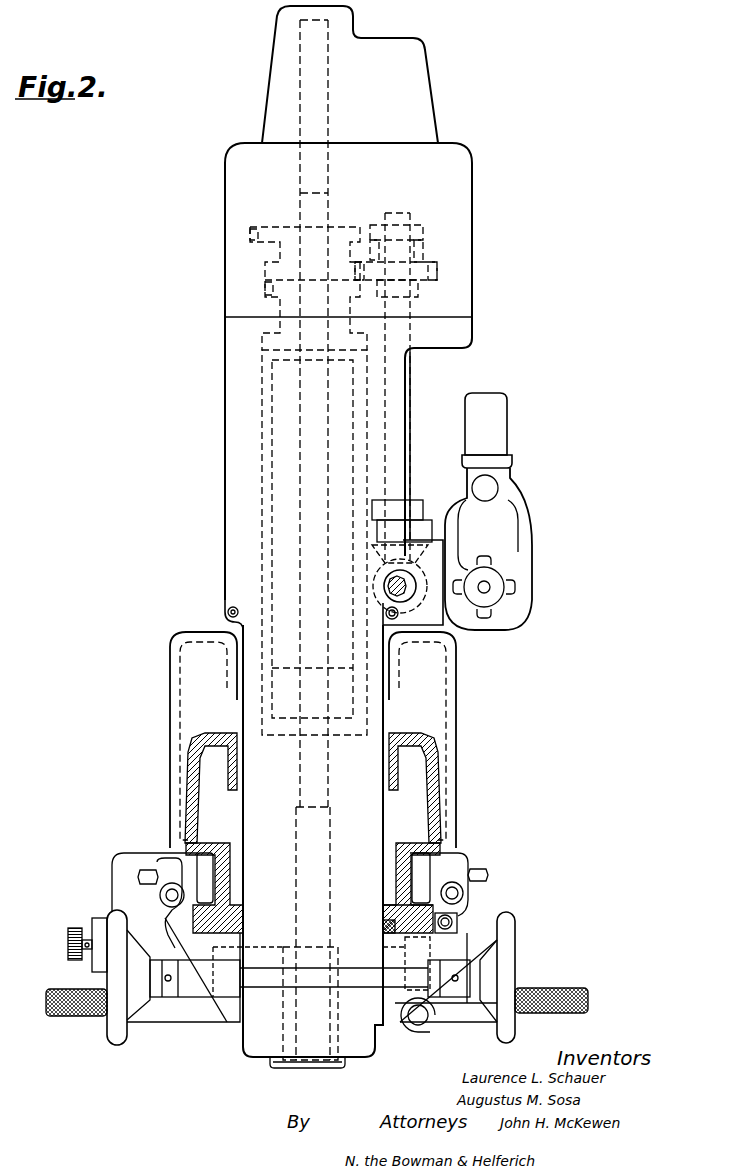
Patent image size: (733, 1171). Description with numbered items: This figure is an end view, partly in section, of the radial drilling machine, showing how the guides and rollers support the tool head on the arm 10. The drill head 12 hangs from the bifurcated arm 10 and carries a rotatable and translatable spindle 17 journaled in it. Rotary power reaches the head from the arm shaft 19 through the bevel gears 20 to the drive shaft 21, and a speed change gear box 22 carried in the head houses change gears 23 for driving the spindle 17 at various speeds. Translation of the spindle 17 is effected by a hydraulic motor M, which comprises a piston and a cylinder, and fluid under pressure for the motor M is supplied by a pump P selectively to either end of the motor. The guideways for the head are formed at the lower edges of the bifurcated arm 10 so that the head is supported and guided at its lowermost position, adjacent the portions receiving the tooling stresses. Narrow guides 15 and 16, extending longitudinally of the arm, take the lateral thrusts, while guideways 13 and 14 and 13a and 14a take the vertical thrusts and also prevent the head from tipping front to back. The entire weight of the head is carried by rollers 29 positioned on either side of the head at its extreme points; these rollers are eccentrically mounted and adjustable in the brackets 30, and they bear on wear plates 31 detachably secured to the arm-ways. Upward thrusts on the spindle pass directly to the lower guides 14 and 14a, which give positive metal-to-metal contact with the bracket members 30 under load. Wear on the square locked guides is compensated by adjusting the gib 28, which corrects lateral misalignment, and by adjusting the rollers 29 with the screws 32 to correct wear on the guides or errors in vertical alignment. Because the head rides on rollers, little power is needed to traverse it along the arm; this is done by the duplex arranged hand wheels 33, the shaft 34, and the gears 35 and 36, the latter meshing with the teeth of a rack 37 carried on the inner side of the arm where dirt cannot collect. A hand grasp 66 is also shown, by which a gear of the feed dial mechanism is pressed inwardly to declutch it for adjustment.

The speed change gear box 22 is at (472, 193).
The spindle 17 is at (330, 108).
The drive shaft 21 is at (411, 403).
The change gears 23 is at (373, 226).
The hydraulic motor M is at (262, 425).
The drill head 12 is at (225, 500).
The pump P is at (488, 511).
The bevel gears 20 is at (409, 571).
The arm shaft 19 is at (405, 596).
The arm 10 is at (172, 713).
The rollers 29 is at (206, 860).
The guideway 13a is at (213, 897).
The guideway 13 is at (412, 890).
The lower guide 14a is at (213, 940).
The narrow guide 16 is at (384, 908).
The rack 37 is at (384, 926).
The lower guide 14 is at (405, 946).
The wear plates 31 is at (248, 969).
The brackets 30 is at (165, 918).
The screws 32 is at (160, 896).
The narrow guide 15 is at (457, 920).
The gib 28 is at (455, 936).
The gear 35 is at (383, 1013).
The gear 36 is at (378, 990).
The shaft 34 is at (320, 990).
The hand grasp 66 is at (80, 930).
The hand wheels 33 is at (120, 1045).